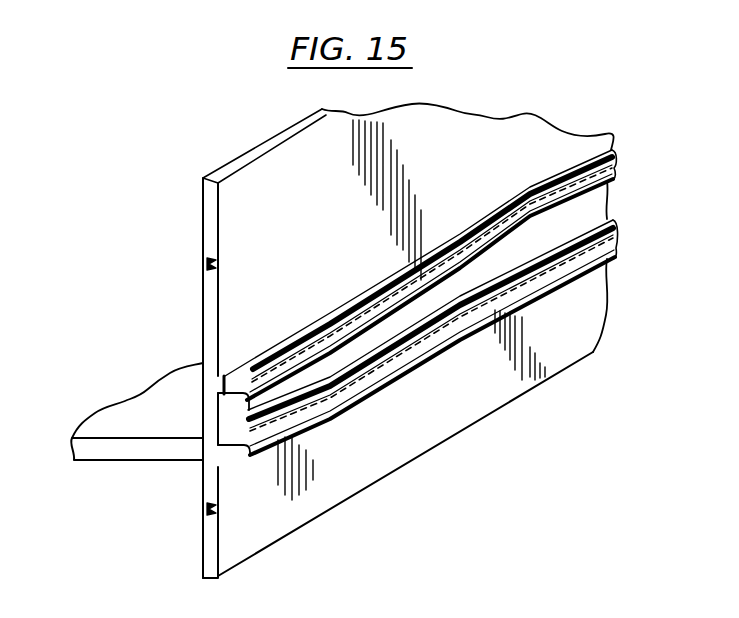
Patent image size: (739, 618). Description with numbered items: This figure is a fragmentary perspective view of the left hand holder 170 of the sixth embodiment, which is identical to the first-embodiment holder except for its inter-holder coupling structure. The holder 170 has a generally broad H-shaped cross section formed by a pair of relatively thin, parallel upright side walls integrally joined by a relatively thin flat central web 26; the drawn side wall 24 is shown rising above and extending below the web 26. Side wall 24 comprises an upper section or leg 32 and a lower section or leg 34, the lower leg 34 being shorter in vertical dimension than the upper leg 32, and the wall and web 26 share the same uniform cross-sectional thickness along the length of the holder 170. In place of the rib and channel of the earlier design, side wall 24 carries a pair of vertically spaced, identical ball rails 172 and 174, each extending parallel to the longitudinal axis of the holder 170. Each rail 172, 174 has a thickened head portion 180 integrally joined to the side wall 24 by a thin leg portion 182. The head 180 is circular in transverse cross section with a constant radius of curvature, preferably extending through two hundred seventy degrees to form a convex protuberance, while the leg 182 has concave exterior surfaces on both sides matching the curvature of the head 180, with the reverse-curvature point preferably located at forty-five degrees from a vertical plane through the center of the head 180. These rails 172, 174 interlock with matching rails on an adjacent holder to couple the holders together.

The holder 170 is at (194, 177).
The side wall 24 is at (190, 265).
The upper leg 32 is at (204, 324).
The central web 26 is at (144, 458).
The lower leg 34 is at (204, 559).
The leg portion 182 is at (223, 382).
The head portion 180 is at (250, 383).
The ball rail 172 is at (512, 253).
The ball rail 174 is at (419, 365).